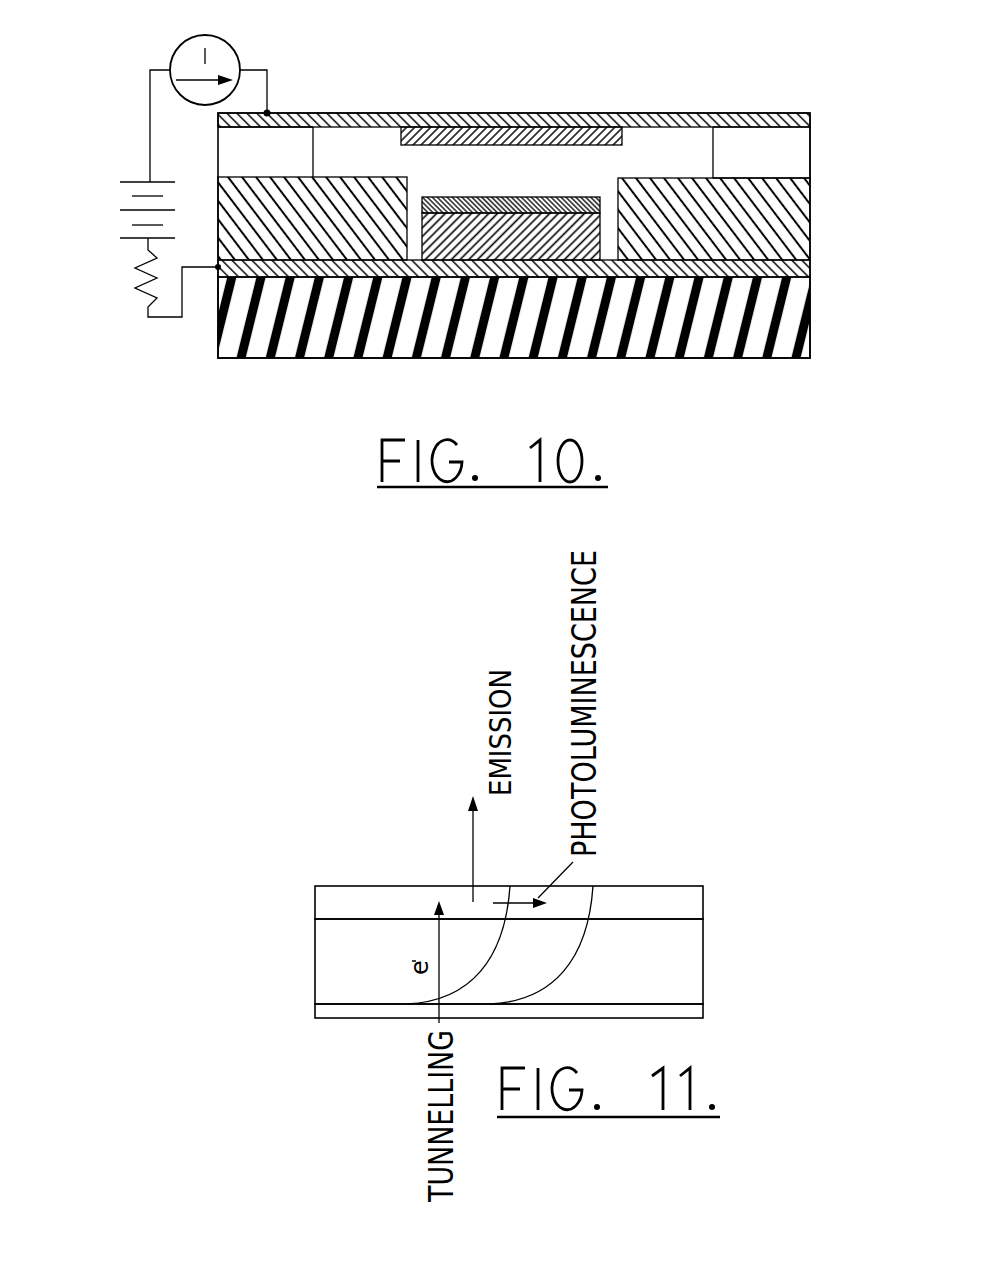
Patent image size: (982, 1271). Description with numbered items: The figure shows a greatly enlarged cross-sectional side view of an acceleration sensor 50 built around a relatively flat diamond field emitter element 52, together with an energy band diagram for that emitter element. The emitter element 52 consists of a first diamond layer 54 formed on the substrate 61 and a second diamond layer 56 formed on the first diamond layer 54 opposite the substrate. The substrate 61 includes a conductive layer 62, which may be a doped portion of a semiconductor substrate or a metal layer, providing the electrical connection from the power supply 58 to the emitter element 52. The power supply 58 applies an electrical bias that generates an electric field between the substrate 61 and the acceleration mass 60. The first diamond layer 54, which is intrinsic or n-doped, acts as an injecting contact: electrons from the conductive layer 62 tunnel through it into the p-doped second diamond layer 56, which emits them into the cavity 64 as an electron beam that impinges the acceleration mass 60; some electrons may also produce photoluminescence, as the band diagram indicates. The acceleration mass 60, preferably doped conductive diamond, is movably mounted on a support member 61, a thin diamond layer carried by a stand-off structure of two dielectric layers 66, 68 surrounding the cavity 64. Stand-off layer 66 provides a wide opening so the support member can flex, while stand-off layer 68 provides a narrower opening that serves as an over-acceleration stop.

In FIG. 10, the acceleration sensor 50 is at (446, 80).
In FIG. 10, the diamond field emitter element 52 is at (558, 172).
In FIG. 10, the first diamond layer 54 is at (458, 230).
In FIG. 11, the first diamond layer 54 is at (315, 959).
In FIG. 10, the second diamond layer 56 is at (523, 204).
In FIG. 11, the second diamond layer 56 is at (315, 900).
In FIG. 10, the power supply 58 is at (128, 192).
In FIG. 10, the acceleration mass 60 is at (577, 133).
In FIG. 10, the support member / substrate 61 is at (658, 115).
In FIG. 10, the conductive layer 62 is at (212, 283).
In FIG. 11, the conductive layer 62 is at (315, 1012).
In FIG. 10, the cavity 64 is at (380, 137).
In FIG. 10, the stand-off layer 66 is at (790, 162).
In FIG. 10, the stand-off layer 68 is at (792, 232).